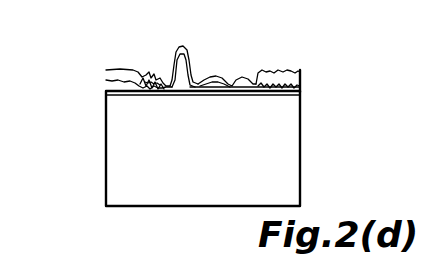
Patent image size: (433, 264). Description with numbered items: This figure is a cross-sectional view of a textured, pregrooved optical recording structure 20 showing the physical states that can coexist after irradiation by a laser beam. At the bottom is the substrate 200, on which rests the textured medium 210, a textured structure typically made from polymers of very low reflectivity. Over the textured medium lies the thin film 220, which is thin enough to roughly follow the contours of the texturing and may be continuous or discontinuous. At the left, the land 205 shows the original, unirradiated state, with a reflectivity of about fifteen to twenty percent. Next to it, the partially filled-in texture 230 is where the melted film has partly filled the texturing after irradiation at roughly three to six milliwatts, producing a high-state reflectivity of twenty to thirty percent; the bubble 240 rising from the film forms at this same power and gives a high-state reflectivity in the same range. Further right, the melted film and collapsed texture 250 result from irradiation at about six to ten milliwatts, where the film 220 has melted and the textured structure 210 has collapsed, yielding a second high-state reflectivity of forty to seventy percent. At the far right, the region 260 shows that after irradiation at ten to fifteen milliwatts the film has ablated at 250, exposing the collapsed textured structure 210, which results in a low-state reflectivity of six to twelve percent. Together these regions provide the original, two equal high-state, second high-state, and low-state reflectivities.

The textured, pregrooved optical recording structure 20 is at (86, 150).
The substrate 200 is at (226, 153).
The original state land 205 is at (106, 69).
The textured medium 210 is at (106, 91).
The thin film 220 is at (100, 80).
The melted film / partially filled-in texture 230 is at (148, 74).
The bubble 240 is at (175, 58).
The melted film and collapsed texture 250 is at (211, 78).
The ablated film region exposing collapsed textured structure 260 is at (247, 73).